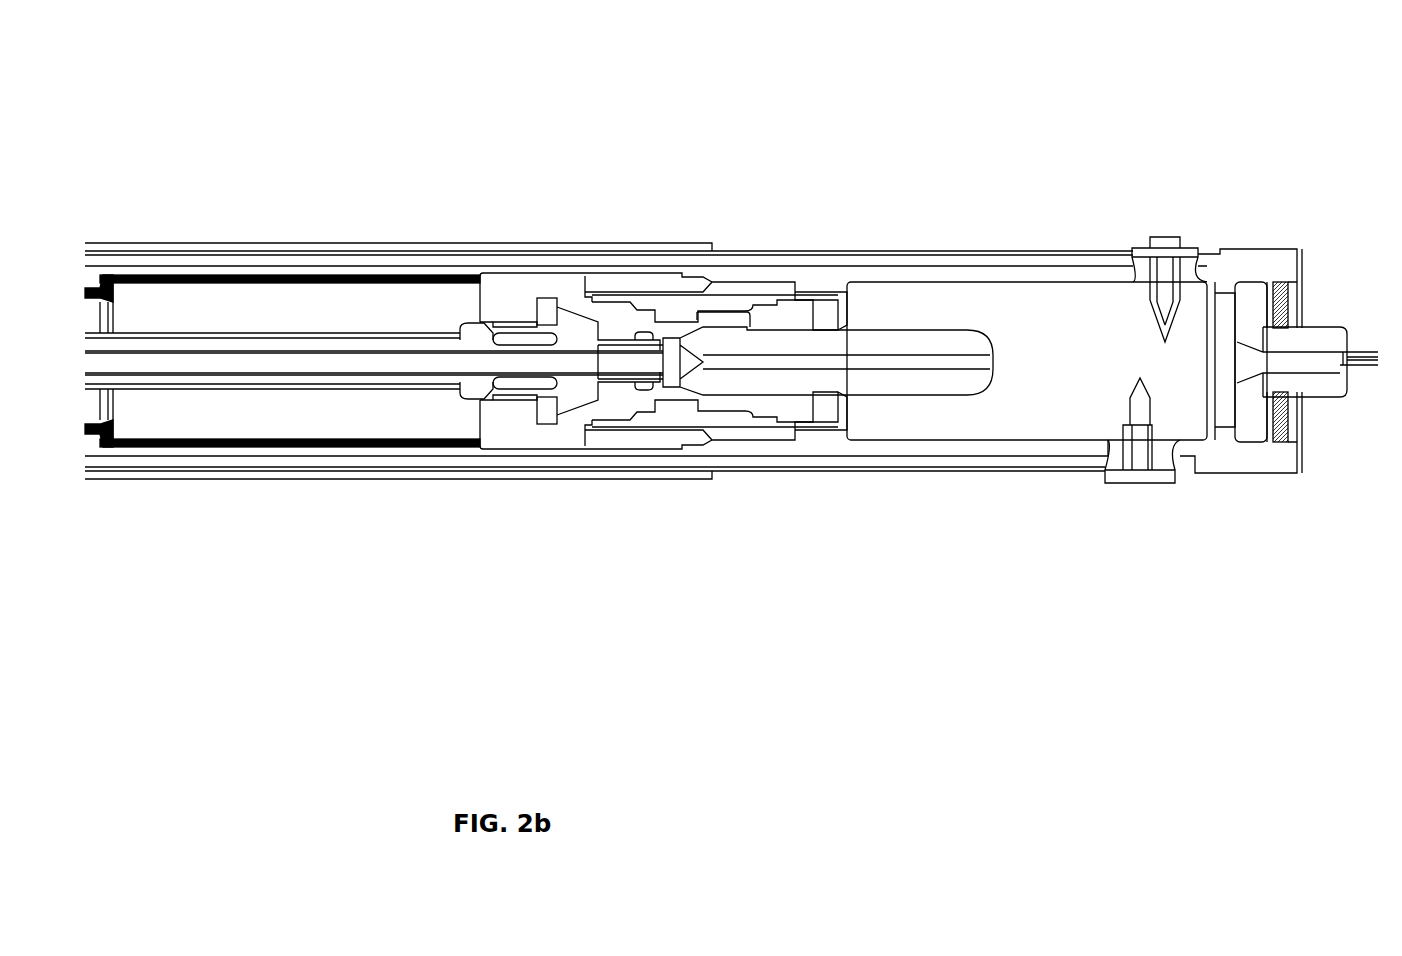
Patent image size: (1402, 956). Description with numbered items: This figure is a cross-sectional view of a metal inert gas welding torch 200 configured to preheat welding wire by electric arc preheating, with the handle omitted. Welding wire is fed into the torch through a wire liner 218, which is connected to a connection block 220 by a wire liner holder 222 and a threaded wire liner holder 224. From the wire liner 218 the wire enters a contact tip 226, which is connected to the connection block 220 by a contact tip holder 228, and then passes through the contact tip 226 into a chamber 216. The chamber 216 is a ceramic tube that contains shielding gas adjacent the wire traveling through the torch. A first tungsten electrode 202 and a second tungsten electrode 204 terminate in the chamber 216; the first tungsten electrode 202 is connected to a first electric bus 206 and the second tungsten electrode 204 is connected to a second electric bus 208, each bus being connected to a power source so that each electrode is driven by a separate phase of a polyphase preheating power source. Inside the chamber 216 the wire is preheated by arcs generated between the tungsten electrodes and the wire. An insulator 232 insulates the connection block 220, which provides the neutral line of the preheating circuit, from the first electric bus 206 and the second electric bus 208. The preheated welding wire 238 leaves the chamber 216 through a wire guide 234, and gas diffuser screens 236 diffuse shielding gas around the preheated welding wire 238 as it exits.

The welding torch 200 is at (352, 104).
The first tungsten electrode 202 is at (1162, 250).
The second tungsten electrode 204 is at (1140, 485).
The first electric bus 206 is at (960, 267).
The second electric bus 208 is at (960, 467).
The chamber 216 is at (1103, 330).
The wire liner 218 is at (278, 365).
The connection block 220 is at (615, 405).
The wire liner holder 222 is at (475, 330).
The threaded wire liner holder 224 is at (545, 338).
The contact tip 226 is at (815, 340).
The contact tip holder 228 is at (765, 425).
The insulator 232 is at (688, 285).
The wire guide 234 is at (1250, 425).
The gas diffuser screens 236 is at (1290, 305).
The preheated welding wire 238 is at (1367, 368).